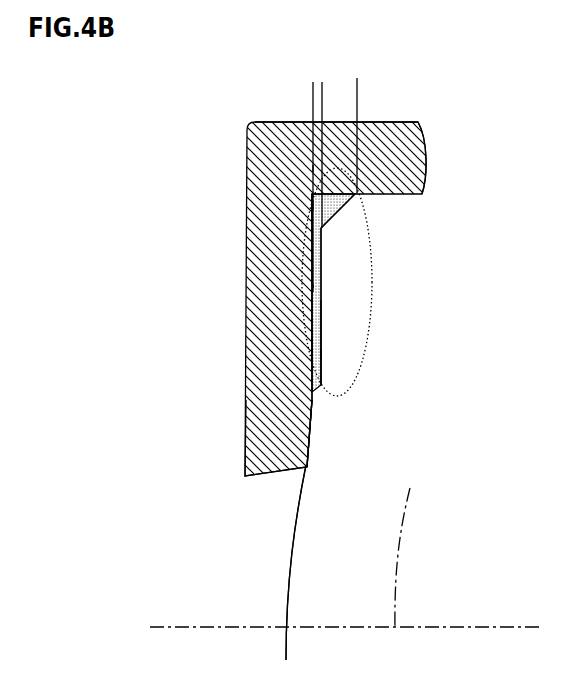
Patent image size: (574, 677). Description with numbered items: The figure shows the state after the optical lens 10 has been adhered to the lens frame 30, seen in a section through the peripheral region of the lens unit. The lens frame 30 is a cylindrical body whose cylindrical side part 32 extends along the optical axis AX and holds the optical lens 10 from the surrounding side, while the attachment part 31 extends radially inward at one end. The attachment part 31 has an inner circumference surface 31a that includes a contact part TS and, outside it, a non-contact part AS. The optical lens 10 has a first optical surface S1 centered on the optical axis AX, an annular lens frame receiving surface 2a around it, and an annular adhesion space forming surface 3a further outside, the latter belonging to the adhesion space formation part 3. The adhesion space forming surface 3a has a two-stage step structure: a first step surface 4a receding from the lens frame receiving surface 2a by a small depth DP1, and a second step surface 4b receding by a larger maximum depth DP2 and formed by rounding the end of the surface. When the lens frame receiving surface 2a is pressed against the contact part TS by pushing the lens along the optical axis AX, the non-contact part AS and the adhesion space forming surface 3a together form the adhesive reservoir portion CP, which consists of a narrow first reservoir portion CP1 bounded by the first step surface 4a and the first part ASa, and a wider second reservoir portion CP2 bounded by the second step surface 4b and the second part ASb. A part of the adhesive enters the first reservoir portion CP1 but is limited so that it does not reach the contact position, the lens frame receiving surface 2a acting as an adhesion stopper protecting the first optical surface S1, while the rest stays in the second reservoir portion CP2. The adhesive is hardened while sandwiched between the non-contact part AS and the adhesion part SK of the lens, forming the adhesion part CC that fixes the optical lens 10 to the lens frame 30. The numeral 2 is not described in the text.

The adhesion space formation part 3 is at (297, 312).
The leg portion 2 is at (300, 416).
The lens frame receiving surface 2a is at (309, 425).
The attachment part 31 is at (292, 333).
The adhesion space forming surface 3a is at (310, 352).
The first step surface 4a is at (310, 373).
The inner circumference surface 31a is at (316, 360).
The adhesion part CC is at (328, 212).
The second step surface 4b is at (312, 212).
The second part ASb is at (338, 202).
The non-contact part AS is at (317, 292).
The first part ASa is at (322, 330).
The adhesion part SK is at (370, 378).
The contact part TS is at (312, 411).
The depth DP1 is at (338, 108).
The depth DP2 is at (313, 92).
The second reservoir portion CP2 is at (312, 168).
The adhesive reservoir portion CP is at (317, 205).
The first reservoir portion CP1 is at (313, 288).
The lens frame 30 is at (230, 100).
The cylindrical side part 32 is at (408, 121).
The optical lens 10 is at (188, 517).
The first optical surface S1 is at (288, 560).
The optical axis AX is at (345, 546).